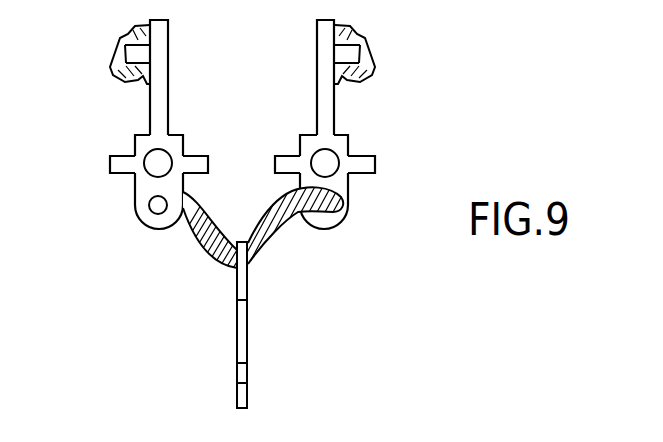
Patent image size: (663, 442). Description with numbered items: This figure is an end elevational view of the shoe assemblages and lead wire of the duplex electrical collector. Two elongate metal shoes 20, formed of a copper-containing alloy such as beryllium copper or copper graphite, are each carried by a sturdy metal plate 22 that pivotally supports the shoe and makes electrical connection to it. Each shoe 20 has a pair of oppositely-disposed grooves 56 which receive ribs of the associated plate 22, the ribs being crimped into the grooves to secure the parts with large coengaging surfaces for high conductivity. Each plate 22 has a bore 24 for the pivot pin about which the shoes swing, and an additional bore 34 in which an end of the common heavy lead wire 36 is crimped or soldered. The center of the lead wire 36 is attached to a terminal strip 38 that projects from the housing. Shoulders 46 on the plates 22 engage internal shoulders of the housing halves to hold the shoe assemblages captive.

The metal shoe 20 is at (130, 55).
The metal plate 22 is at (157, 80).
The bore 24 is at (158, 165).
The additional bore 34 is at (157, 208).
The lead wire 36 is at (278, 250).
The terminal strip 38 is at (248, 333).
The shoulder 46 is at (201, 161).
The groove 56 is at (134, 74).